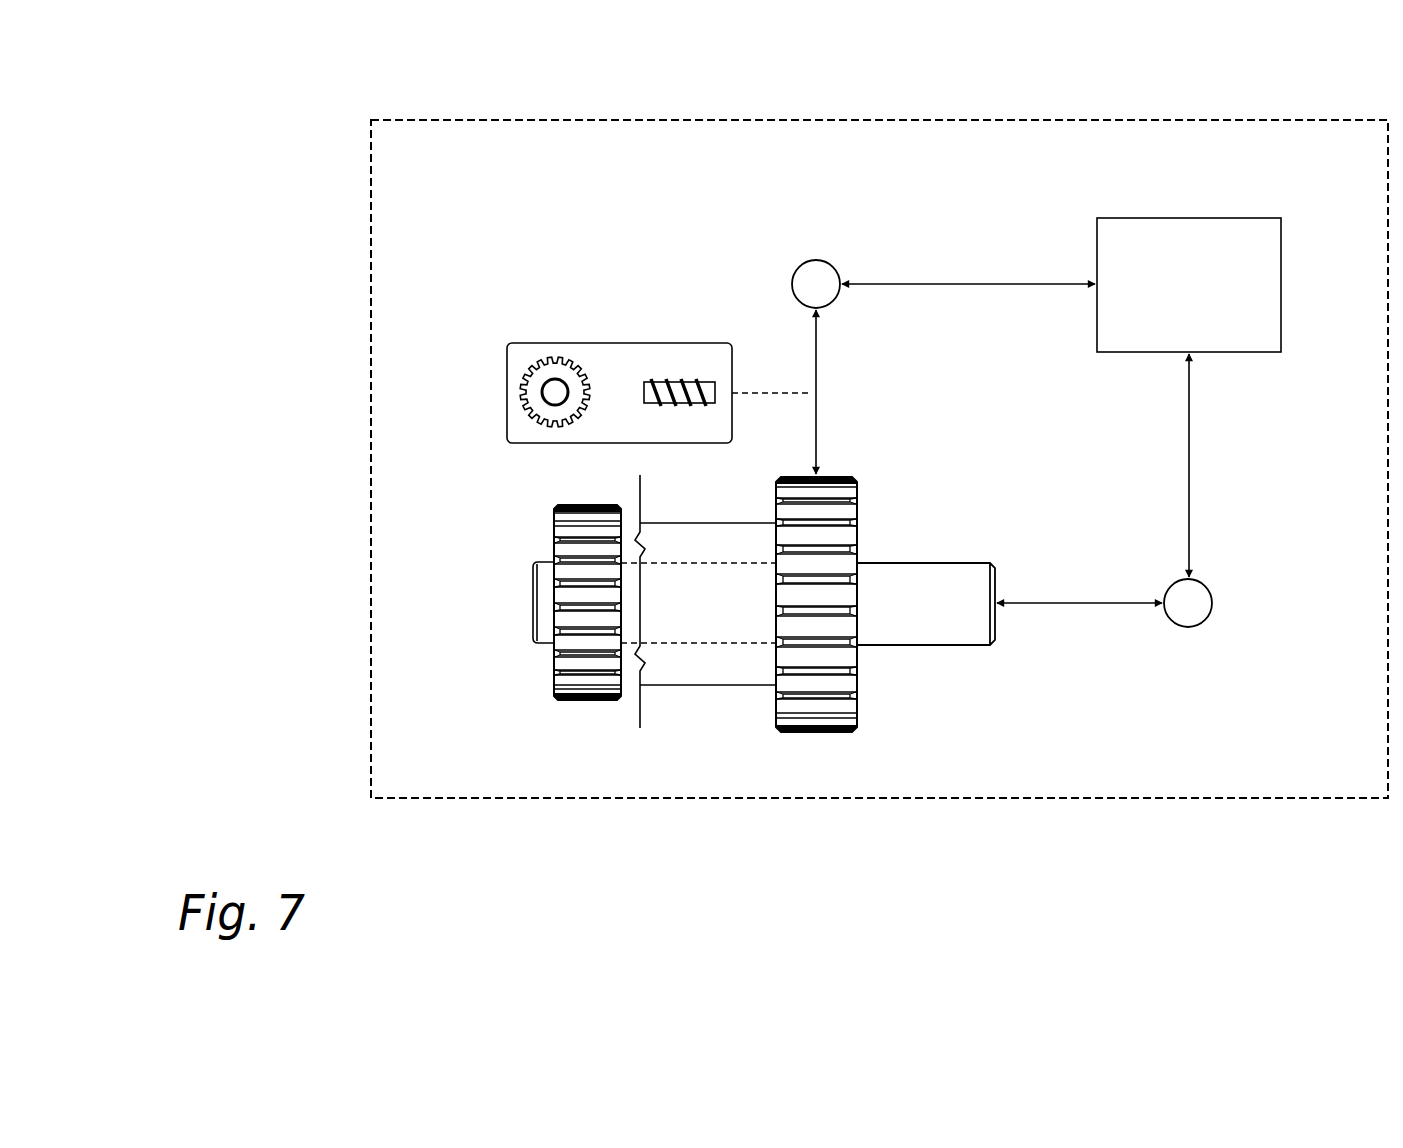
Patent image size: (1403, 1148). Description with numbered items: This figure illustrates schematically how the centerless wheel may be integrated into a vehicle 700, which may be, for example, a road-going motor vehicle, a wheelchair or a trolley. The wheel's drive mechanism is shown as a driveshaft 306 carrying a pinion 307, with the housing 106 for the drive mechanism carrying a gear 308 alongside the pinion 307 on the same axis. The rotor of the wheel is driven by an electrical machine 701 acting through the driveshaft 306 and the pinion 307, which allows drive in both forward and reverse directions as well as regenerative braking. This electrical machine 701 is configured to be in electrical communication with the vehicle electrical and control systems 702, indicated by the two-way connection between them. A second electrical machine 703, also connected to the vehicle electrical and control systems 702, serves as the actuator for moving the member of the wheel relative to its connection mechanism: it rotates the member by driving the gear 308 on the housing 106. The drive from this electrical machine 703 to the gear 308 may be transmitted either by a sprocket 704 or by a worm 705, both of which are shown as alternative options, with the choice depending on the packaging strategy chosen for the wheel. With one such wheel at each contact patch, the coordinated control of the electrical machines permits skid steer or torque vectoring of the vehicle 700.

The vehicle 700 is at (1062, 120).
The electrical machine 701 is at (1207, 617).
The vehicle electrical and control systems 702 is at (1108, 222).
The electrical machine 703 is at (806, 265).
The sprocket 704 is at (552, 357).
The worm 705 is at (670, 382).
The housing 106 is at (688, 670).
The driveshaft 306 is at (965, 638).
The pinion 307 is at (553, 688).
The gear 308 is at (848, 477).